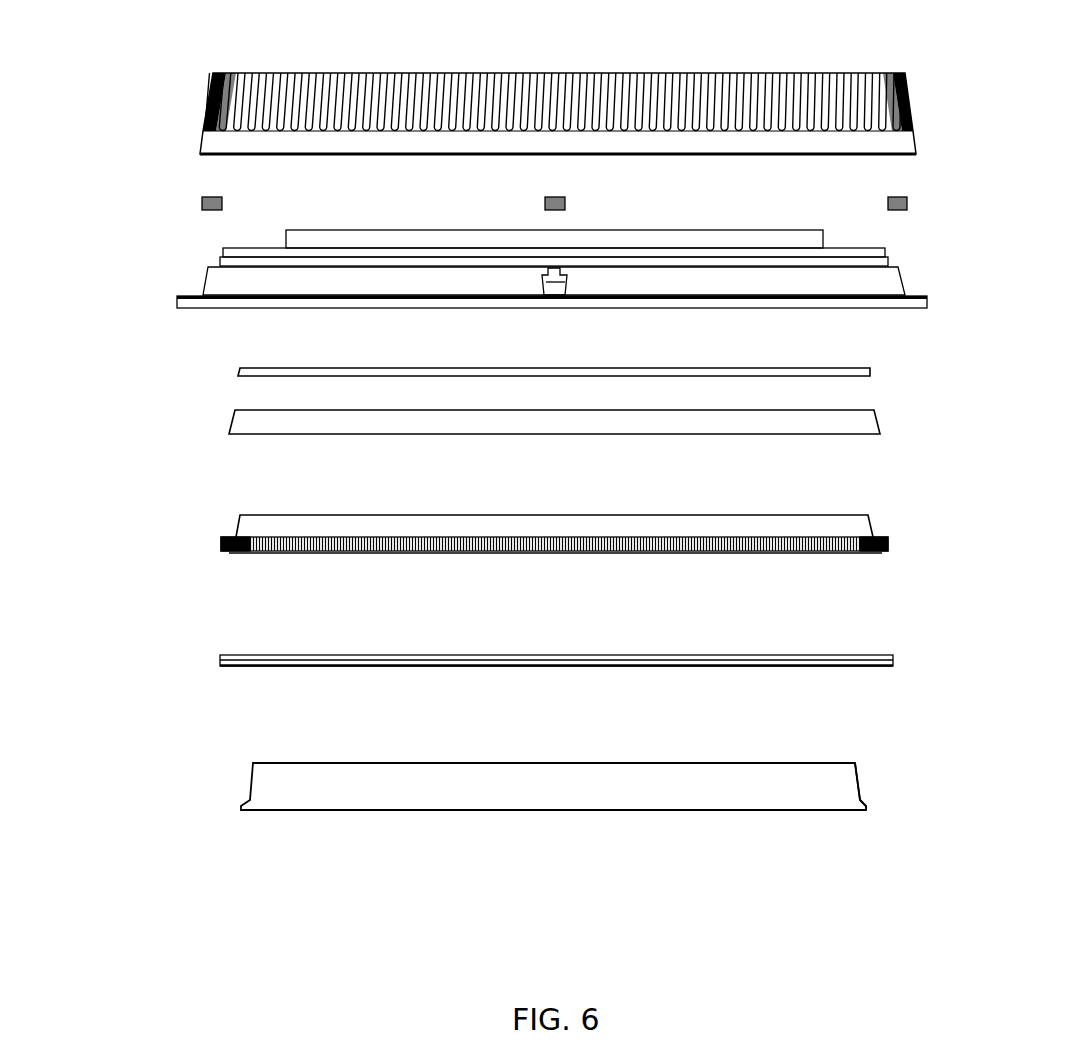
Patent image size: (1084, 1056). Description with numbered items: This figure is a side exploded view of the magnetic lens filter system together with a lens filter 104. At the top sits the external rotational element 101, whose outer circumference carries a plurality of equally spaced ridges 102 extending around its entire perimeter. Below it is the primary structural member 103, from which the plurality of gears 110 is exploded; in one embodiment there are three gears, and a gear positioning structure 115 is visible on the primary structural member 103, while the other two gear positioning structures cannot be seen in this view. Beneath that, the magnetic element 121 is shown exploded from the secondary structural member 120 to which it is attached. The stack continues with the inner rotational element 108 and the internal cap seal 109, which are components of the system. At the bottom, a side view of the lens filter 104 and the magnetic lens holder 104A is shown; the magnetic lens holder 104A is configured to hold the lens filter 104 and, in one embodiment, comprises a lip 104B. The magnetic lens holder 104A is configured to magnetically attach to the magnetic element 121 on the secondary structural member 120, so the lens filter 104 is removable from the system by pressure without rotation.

The external rotational element 101 is at (166, 104).
The ridges 102 is at (640, 86).
The primary structural member 103 is at (490, 261).
The gears 110 is at (224, 202).
The gear positioning structure 115 is at (545, 286).
The secondary structural member 120 is at (196, 412).
The magnetic element 121 is at (872, 369).
The inner rotational element 108 is at (194, 541).
The internal cap seal 109 is at (188, 659).
The lens filter 104 is at (525, 800).
The magnetic lens holder 104A is at (860, 790).
The lip 104B is at (866, 808).